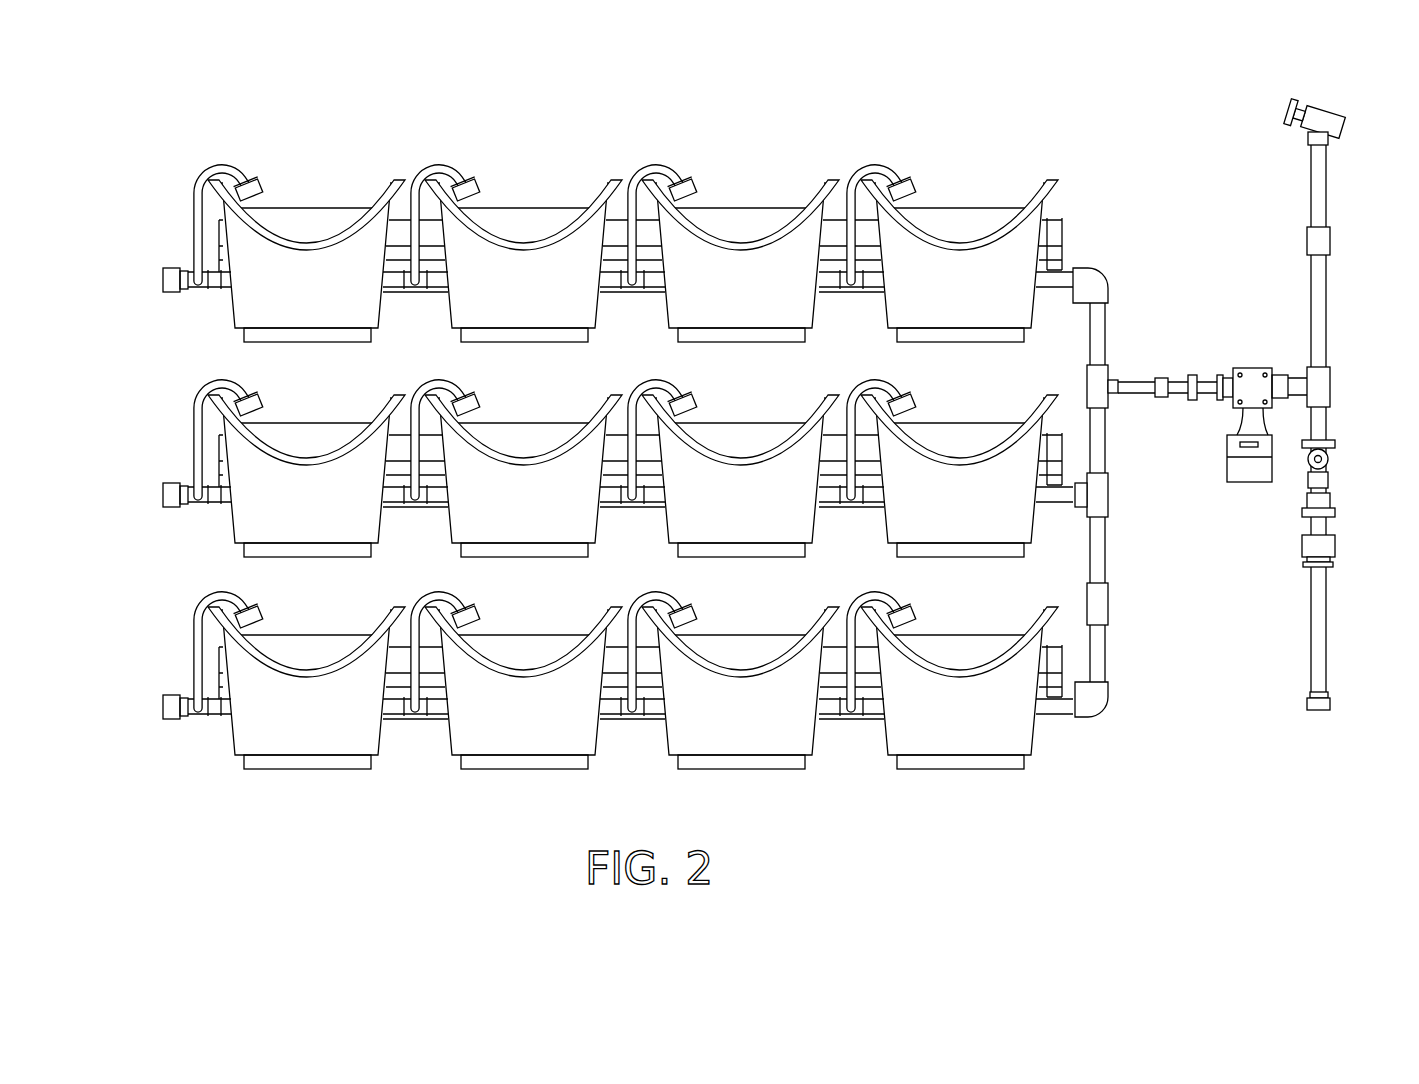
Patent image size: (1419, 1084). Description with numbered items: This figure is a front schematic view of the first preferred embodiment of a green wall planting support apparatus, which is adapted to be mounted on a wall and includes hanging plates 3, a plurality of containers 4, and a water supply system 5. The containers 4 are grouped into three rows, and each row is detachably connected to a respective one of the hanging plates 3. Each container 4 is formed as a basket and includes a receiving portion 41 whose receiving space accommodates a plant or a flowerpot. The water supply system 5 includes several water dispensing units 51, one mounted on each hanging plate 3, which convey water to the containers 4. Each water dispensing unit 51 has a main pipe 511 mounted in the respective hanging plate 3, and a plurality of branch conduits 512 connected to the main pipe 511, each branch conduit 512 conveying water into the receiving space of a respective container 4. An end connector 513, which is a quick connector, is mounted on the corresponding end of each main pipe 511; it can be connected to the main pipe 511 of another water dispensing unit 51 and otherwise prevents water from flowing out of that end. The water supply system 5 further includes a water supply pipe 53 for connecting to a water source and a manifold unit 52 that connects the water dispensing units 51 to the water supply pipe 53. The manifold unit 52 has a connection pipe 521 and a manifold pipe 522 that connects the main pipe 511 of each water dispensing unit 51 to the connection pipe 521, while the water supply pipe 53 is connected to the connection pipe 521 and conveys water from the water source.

The hanging plate 3 is at (1072, 250).
The container 4 is at (633, 506).
The receiving portion 41 is at (972, 650).
The water supply system 5 is at (1346, 404).
The water dispensing unit 51 is at (596, 488).
The main pipe 511 is at (655, 705).
The branch conduit 512 is at (437, 593).
The end connector 513 is at (165, 704).
The manifold unit 52 is at (1168, 362).
The connection pipe 521 is at (1178, 392).
The manifold pipe 522 is at (1095, 543).
The water supply pipe 53 is at (1322, 527).